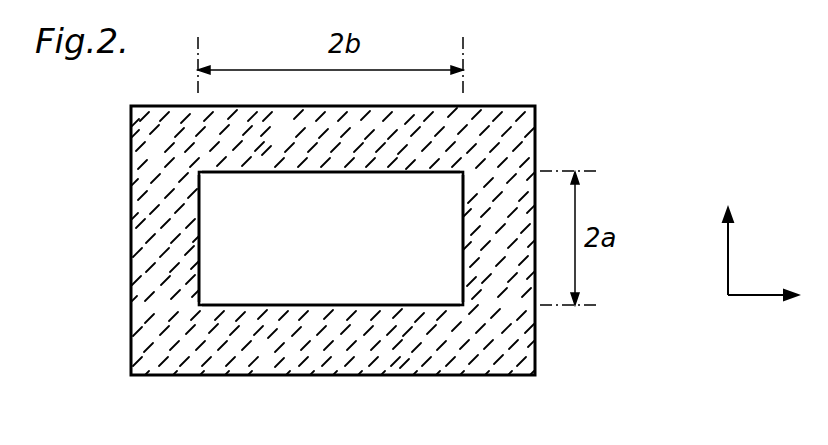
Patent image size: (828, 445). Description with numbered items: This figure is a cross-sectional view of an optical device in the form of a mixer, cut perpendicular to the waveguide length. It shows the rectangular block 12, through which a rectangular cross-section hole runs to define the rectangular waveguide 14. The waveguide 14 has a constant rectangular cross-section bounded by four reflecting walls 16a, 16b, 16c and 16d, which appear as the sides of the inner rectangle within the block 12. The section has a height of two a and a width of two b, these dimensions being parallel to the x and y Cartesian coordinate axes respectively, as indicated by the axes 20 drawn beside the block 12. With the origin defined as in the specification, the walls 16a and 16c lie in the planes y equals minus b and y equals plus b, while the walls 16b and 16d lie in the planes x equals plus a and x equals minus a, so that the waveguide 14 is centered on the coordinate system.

The rectangular block 12 is at (143, 338).
The rectangular waveguide 14 is at (223, 252).
The reflecting wall 16a is at (199, 198).
The reflecting wall 16b is at (285, 172).
The reflecting wall 16c is at (465, 188).
The reflecting wall 16d is at (293, 305).
The Cartesian coordinate axes 20 is at (736, 296).